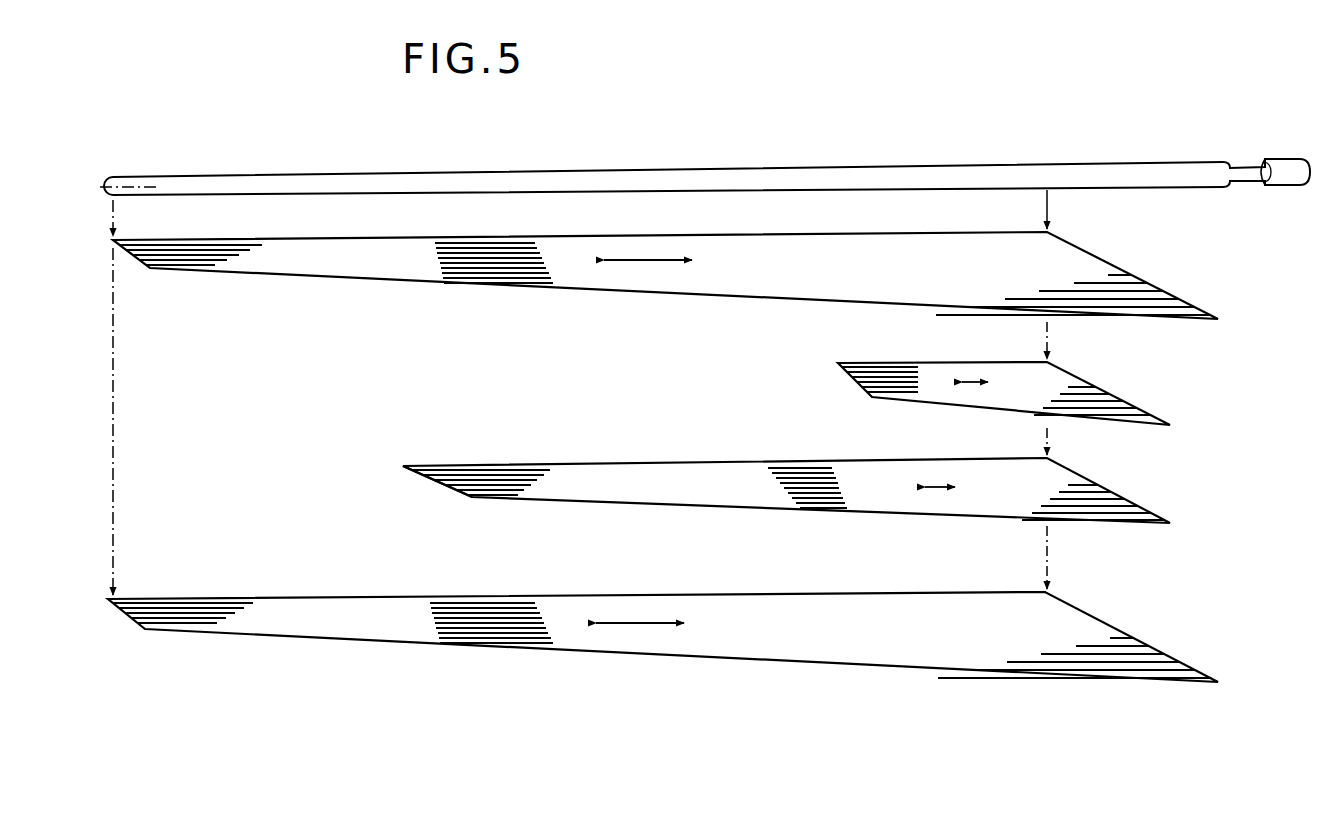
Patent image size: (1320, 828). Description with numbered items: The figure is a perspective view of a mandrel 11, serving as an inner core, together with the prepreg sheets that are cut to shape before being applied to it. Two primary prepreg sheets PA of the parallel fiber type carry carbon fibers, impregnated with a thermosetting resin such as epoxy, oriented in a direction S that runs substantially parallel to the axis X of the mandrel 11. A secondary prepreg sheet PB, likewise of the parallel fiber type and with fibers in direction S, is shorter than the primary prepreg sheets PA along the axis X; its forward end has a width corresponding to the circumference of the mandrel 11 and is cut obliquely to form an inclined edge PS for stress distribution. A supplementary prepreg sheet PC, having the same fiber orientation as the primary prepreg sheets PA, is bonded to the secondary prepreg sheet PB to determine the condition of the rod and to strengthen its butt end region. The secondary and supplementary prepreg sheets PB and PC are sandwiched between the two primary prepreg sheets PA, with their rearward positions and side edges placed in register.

The mandrel 11 is at (742, 173).
The axis of the mandrel X is at (120, 384).
The primary prepreg sheet PA is at (408, 286).
The secondary prepreg sheet PB is at (912, 402).
The supplementary prepreg sheet PC is at (560, 503).
The inclined edge PS is at (435, 482).
The fiber orientation direction S is at (650, 262).